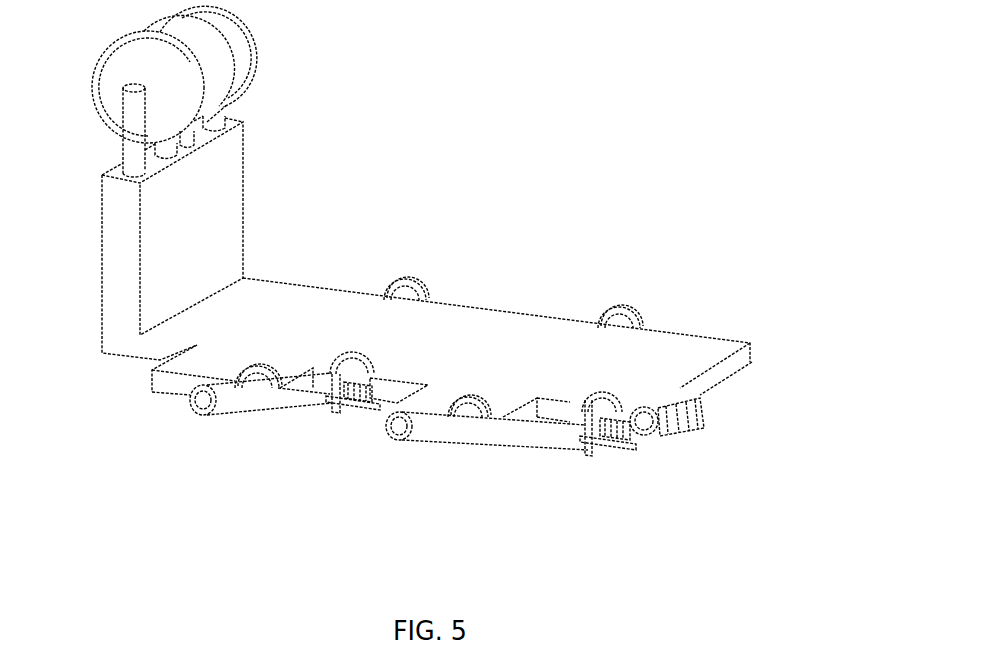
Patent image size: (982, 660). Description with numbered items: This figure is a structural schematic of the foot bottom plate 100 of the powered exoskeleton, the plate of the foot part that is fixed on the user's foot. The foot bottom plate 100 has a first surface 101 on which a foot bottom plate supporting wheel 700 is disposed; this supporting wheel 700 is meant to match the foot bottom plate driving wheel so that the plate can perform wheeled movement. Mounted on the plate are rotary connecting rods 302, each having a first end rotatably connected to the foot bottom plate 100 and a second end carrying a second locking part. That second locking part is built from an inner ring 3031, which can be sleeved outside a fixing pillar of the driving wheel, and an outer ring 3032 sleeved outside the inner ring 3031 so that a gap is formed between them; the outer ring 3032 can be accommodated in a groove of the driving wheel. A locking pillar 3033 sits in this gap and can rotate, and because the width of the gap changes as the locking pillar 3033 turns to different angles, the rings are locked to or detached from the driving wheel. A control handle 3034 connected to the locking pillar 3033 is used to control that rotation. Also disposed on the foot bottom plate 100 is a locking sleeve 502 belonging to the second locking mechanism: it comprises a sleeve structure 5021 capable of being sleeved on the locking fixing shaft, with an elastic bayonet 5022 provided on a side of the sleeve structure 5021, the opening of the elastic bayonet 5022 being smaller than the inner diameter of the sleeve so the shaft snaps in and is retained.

The foot bottom plate supporting wheel 700 is at (127, 60).
The foot bottom plate 100 is at (732, 375).
The first surface 101 is at (702, 352).
The rotary connecting rod 302 is at (246, 397).
The outer ring 3032 is at (363, 358).
The inner ring 3031 is at (352, 406).
The locking pillar 3033 is at (374, 404).
The control handle 3034 is at (345, 412).
The sleeve structure 5021 is at (641, 437).
The elastic bayonet 5022 is at (690, 430).
The locking sleeve 502 is at (707, 546).